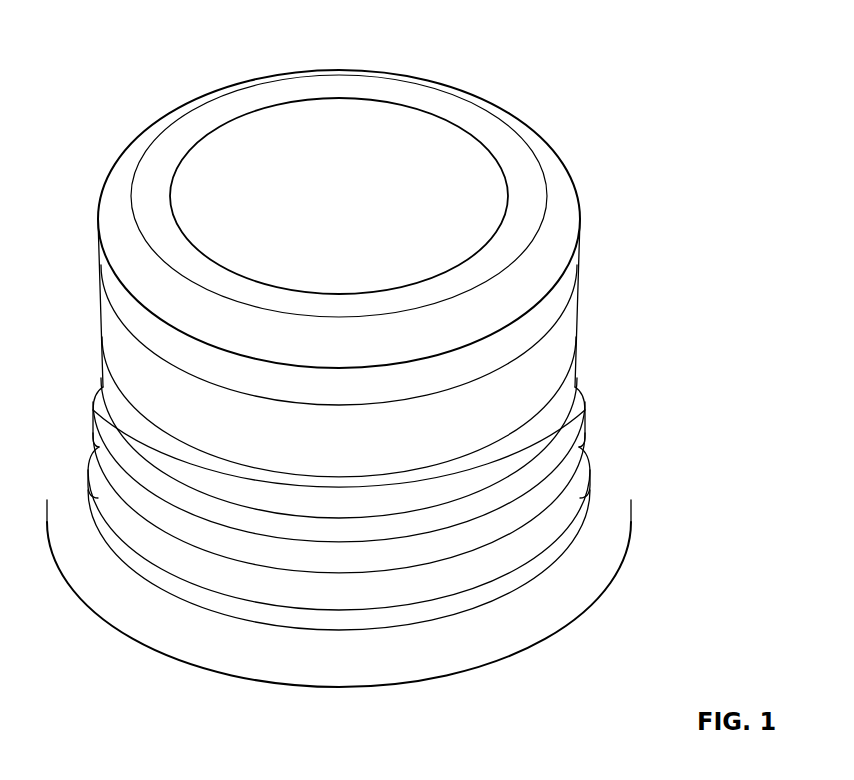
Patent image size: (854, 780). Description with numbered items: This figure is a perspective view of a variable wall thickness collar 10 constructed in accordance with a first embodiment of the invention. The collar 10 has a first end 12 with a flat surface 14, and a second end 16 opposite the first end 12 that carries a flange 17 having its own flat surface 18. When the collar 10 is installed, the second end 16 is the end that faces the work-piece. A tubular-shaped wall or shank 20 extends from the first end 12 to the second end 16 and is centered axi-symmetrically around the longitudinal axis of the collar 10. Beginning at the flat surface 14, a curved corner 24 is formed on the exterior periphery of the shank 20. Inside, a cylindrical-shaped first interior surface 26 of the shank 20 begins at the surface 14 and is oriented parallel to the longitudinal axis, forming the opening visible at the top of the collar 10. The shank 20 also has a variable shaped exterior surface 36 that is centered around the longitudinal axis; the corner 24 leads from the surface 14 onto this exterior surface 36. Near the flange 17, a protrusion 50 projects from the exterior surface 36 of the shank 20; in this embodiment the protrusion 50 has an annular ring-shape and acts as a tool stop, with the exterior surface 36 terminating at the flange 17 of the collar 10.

The variable wall thickness collar 10 is at (124, 66).
The first end 12 is at (426, 67).
The flat surface 14 is at (510, 143).
The second end 16 is at (250, 698).
The flange 17 is at (643, 511).
The flat surface 18 is at (512, 653).
The shank 20 is at (586, 328).
The curved corner 24 is at (557, 177).
The first interior surface 26 is at (437, 132).
The exterior surface 36 is at (634, 258).
The protrusion 50 is at (578, 437).